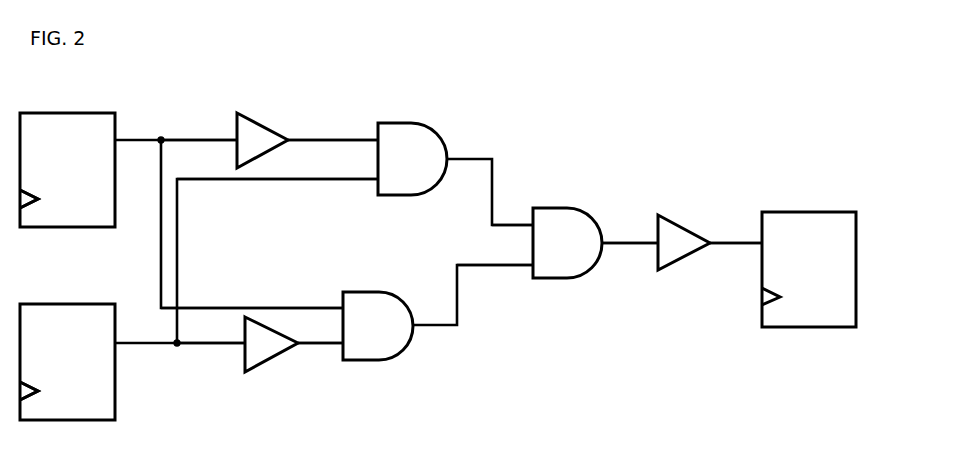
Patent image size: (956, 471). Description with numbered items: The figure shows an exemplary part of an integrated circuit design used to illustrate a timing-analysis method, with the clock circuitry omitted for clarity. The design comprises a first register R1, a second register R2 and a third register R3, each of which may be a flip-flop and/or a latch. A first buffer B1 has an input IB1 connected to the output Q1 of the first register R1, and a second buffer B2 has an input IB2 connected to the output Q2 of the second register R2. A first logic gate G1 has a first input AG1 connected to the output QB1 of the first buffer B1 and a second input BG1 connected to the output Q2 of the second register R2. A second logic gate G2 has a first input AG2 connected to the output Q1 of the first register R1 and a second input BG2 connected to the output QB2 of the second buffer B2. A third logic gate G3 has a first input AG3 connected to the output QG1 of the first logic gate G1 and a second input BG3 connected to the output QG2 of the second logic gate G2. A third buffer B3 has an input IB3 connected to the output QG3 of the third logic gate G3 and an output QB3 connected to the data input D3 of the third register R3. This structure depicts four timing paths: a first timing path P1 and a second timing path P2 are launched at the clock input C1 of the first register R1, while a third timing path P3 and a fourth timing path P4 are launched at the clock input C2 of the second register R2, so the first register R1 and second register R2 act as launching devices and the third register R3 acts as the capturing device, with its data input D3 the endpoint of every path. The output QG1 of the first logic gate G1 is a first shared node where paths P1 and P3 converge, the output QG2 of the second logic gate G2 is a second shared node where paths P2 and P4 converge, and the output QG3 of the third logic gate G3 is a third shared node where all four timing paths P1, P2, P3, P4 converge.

The first register R1 is at (67, 170).
The second register R2 is at (67, 362).
The third register R3 is at (809, 269).
The clock input of the first register C1 is at (36, 190).
The clock input of the second register C2 is at (36, 383).
The output of the first register Q1 is at (121, 141).
The output of the second register Q2 is at (130, 344).
The data input of the third register D3 is at (751, 243).
The first timing path P1 is at (197, 148).
The second timing path P2 is at (239, 224).
The third timing path P3 is at (276, 262).
The fourth timing path P4 is at (211, 354).
The first buffer B1 is at (262, 140).
The second buffer B2 is at (271, 344).
The third buffer B3 is at (684, 242).
The input of the first buffer IB1 is at (199, 131).
The input of the second buffer IB2 is at (211, 333).
The input of the third buffer IB3 is at (630, 233).
The output of the first buffer QB1 is at (332, 131).
The output of the second buffer QB2 is at (316, 333).
The output of the third buffer QB3 is at (735, 233).
The first logic gate G1 is at (412, 148).
The second logic gate G2 is at (378, 315).
The third logic gate G3 is at (567, 233).
The first input of the first logic gate AG1 is at (355, 141).
The second input of the first logic gate BG1 is at (300, 179).
The output of the first logic gate QG1 is at (471, 187).
The first input of the second logic gate AG2 is at (274, 309).
The second input of the second logic gate BG2 is at (343, 345).
The output of the second logic gate QG2 is at (451, 301).
The first input of the third logic gate AG3 is at (534, 225).
The second input of the third logic gate BG3 is at (517, 263).
The output of the third logic gate QG3 is at (610, 243).